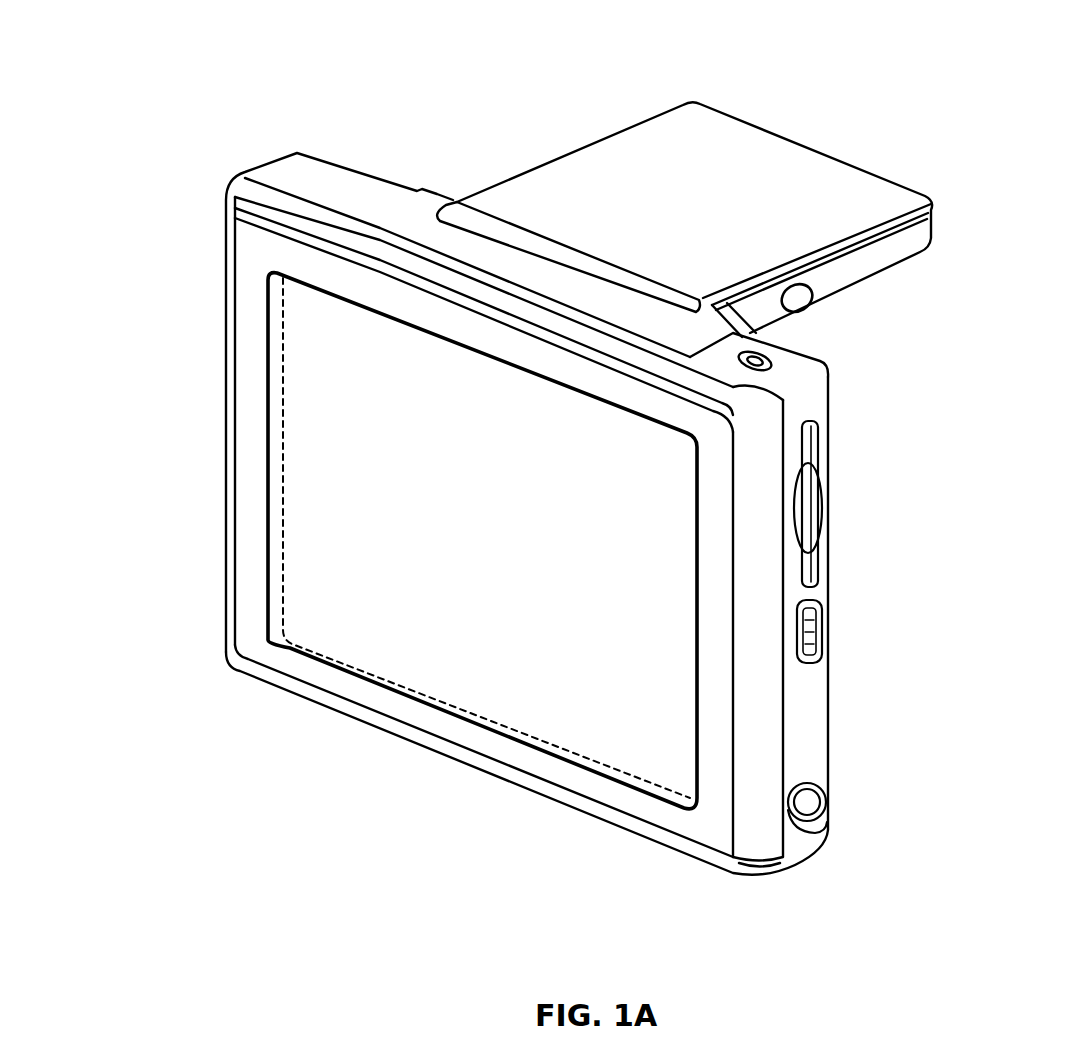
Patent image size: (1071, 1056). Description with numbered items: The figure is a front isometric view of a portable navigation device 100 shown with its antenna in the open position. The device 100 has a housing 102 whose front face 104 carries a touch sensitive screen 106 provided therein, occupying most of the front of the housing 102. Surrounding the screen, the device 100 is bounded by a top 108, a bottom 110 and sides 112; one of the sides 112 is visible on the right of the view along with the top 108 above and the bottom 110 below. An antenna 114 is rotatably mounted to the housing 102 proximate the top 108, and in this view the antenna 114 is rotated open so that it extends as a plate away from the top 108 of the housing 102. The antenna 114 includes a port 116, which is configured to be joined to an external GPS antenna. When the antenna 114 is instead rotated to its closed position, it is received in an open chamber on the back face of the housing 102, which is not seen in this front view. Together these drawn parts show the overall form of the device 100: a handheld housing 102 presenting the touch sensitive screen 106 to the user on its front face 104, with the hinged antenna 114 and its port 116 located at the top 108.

The portable navigation device 100 is at (142, 68).
The housing 102 is at (244, 245).
The front face 104 is at (248, 393).
The touch sensitive screen 106 is at (375, 640).
The top 108 is at (288, 170).
The bottom 110 is at (448, 753).
The sides 112 is at (224, 338).
The antenna 114 is at (655, 133).
The port 116 is at (858, 265).